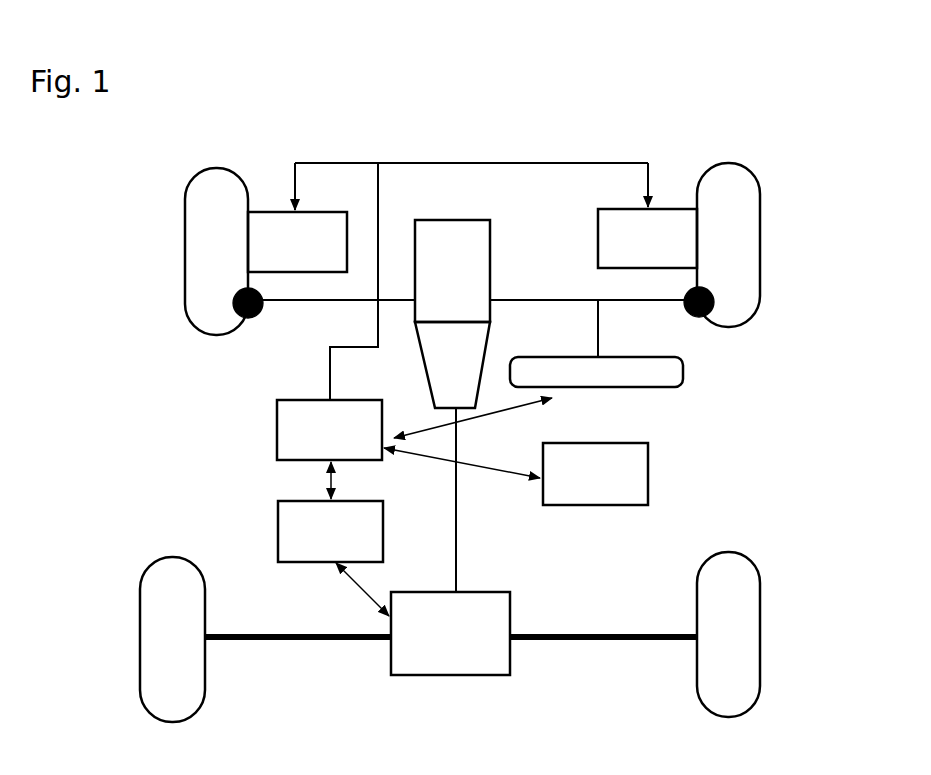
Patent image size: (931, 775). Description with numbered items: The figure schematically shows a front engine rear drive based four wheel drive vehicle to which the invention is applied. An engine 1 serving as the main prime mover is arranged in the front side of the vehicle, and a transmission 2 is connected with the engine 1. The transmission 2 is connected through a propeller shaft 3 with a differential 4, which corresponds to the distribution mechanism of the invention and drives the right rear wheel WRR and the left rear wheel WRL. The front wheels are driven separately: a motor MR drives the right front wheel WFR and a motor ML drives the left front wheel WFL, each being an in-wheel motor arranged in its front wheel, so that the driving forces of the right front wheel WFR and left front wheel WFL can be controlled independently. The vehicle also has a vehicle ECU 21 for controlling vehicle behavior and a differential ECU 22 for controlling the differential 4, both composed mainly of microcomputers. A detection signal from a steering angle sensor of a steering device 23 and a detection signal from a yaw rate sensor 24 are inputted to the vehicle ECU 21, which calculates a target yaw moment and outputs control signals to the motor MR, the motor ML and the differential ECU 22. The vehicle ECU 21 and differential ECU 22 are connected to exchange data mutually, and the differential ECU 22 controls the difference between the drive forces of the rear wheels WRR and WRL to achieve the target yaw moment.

The engine 1 is at (452, 271).
The transmission 2 is at (452, 365).
The propeller shaft 3 is at (457, 523).
The differential 4 is at (510, 607).
The vehicle ECU 21 is at (329, 430).
The differential ECU 22 is at (330, 531).
The steering device 23 is at (685, 368).
The yaw rate sensor 24 is at (595, 474).
The motor ML is at (297, 242).
The motor MR is at (647, 238).
The left front wheel WFL is at (185, 200).
The right front wheel WFR is at (758, 183).
The left rear wheel WRL is at (155, 560).
The right rear wheel WRR is at (755, 562).